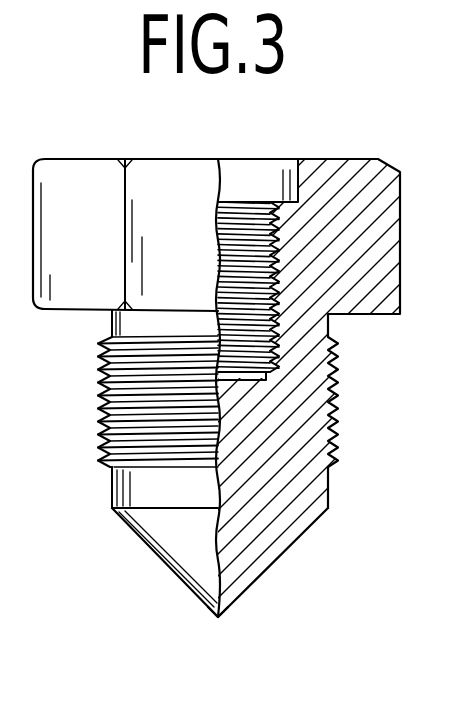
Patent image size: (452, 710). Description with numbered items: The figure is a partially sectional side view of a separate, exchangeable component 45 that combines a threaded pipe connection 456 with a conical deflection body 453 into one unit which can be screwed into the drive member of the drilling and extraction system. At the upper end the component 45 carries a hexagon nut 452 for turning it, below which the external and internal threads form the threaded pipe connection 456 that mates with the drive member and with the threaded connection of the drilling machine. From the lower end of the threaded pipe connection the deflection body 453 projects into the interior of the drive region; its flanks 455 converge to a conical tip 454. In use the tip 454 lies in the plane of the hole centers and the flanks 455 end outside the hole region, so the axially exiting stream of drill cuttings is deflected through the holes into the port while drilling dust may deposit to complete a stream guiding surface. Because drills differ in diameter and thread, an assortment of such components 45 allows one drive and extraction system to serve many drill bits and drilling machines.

The threaded pipe connection 45 is at (343, 383).
The hexagon nut 452 is at (152, 183).
The deflection body 453 is at (168, 537).
The conical tip 454 is at (218, 620).
The flanks 455 is at (170, 574).
The threaded pipe connection 456 is at (263, 218).